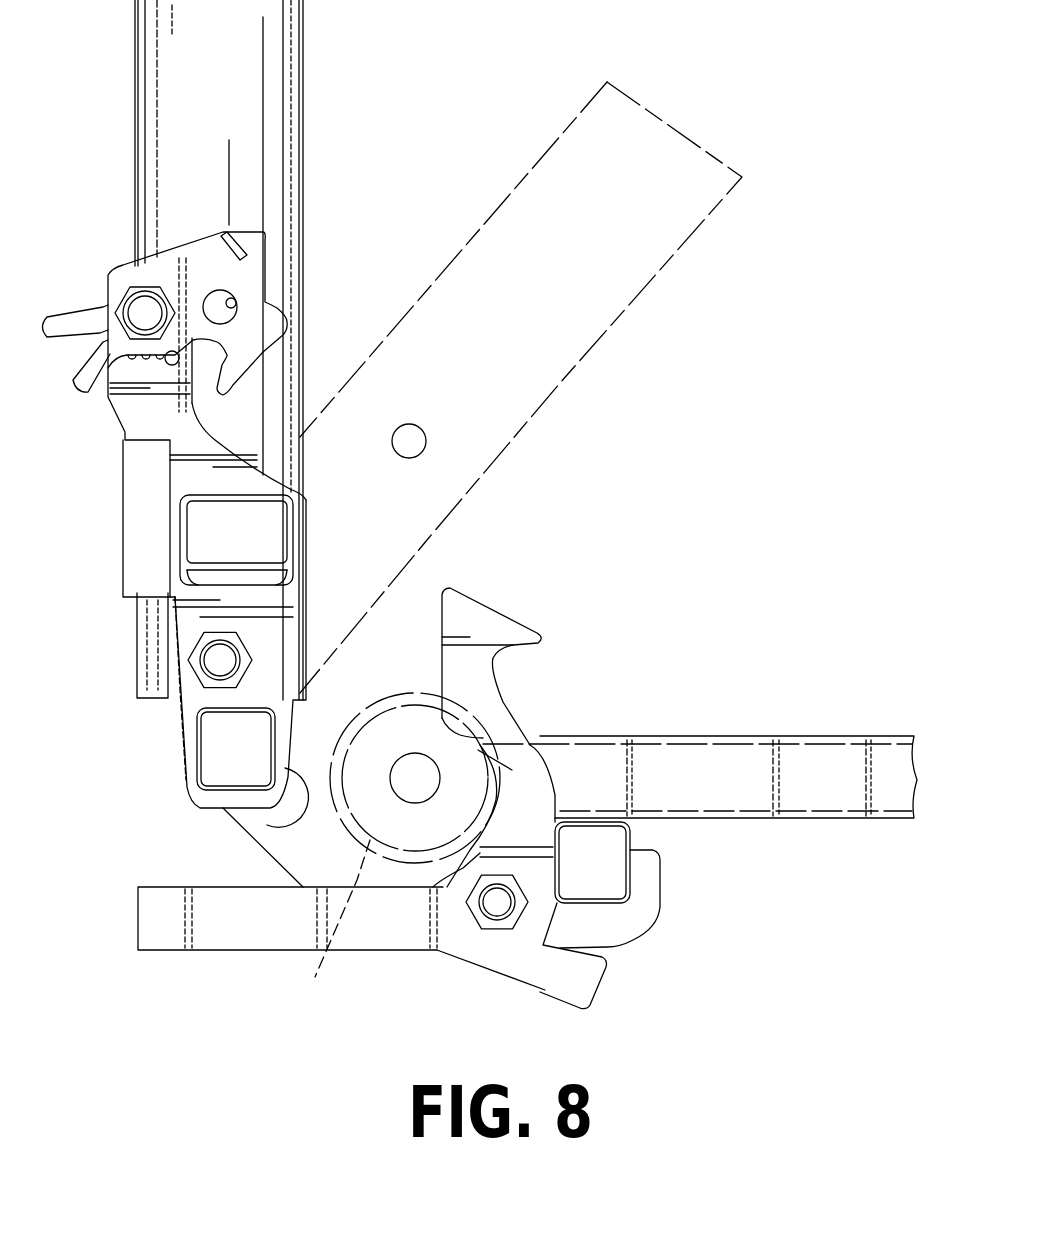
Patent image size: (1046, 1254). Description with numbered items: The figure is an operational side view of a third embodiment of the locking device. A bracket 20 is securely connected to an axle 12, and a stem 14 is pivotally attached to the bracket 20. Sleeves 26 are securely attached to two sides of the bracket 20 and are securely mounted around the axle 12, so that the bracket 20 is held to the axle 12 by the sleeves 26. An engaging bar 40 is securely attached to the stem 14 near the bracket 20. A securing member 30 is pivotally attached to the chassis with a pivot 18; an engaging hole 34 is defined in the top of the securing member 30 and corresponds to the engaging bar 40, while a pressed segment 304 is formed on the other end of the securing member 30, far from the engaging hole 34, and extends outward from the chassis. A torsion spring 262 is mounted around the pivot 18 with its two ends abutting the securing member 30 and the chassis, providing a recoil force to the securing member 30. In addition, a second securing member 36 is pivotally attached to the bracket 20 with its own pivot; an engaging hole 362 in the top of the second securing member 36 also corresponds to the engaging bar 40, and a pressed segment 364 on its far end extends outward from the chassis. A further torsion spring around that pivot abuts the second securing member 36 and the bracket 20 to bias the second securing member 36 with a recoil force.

The axle 12 is at (408, 775).
The stem 14 is at (293, 66).
The pivot 18 is at (493, 915).
The bracket 20 is at (150, 720).
The sleeves 26 is at (388, 910).
The securing member 30 is at (398, 932).
The engaging hole 34 is at (513, 645).
The second securing member 36 is at (104, 252).
The engaging bar 40 is at (225, 316).
The torsion spring 262 is at (500, 793).
The pressed segment 304 is at (207, 938).
The engaging hole 362 is at (237, 303).
The pressed segment 364 is at (87, 390).